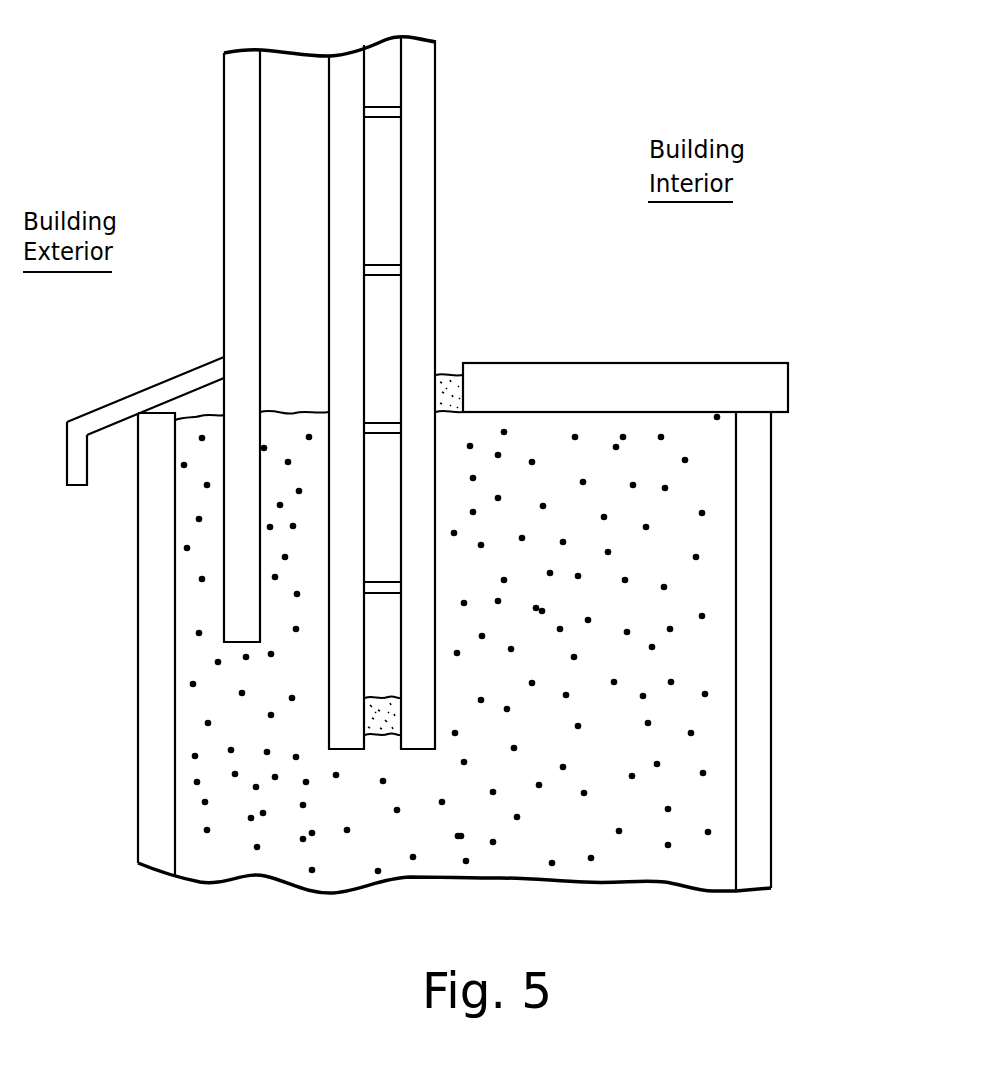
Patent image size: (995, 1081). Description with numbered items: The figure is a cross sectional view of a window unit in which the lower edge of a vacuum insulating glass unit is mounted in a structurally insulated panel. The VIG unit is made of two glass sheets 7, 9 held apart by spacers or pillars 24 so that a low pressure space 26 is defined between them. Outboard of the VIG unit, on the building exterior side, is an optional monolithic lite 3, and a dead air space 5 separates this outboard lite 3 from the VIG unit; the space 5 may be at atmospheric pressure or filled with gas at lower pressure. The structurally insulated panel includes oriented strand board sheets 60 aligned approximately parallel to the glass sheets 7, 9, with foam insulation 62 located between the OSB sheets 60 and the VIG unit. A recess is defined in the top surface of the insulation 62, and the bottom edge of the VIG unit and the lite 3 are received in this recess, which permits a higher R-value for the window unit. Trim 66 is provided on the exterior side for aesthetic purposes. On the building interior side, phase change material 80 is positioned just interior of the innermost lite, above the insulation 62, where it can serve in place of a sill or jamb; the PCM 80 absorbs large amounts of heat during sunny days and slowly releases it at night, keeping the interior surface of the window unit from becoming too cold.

The monolithic lite 3 is at (223, 203).
The dead air space 5 is at (311, 134).
The glass sheet 7 is at (428, 199).
The glass sheet 9 is at (350, 183).
The spacers or pillars 24 is at (386, 270).
The low pressure space/gap 26 is at (383, 325).
The oriented strand board sheets 60 is at (162, 679).
The foam insulation 62 is at (677, 705).
The trim 66 is at (187, 378).
The phase change material 80 is at (630, 370).